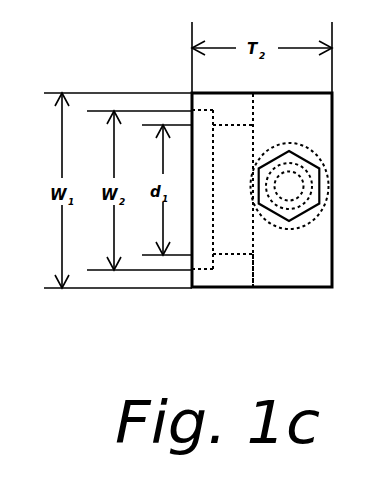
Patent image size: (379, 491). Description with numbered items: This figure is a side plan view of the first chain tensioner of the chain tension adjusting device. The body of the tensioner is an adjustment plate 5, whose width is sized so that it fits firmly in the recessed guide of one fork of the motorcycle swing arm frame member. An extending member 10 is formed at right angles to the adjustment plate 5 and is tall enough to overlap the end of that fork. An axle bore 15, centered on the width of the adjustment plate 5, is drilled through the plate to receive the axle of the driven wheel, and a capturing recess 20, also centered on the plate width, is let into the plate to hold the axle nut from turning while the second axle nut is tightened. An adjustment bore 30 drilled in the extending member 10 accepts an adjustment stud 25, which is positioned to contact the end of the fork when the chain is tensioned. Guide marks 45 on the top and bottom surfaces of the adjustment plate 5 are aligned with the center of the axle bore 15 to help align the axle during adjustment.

The adjustment plate 5 is at (320, 288).
The extending member 10 is at (253, 268).
The axle bore 15 is at (227, 258).
The capturing recess 20 is at (210, 268).
The adjustment stud 25 is at (300, 213).
The adjustment bore 30 is at (303, 143).
The guide marks 45 is at (242, 93).